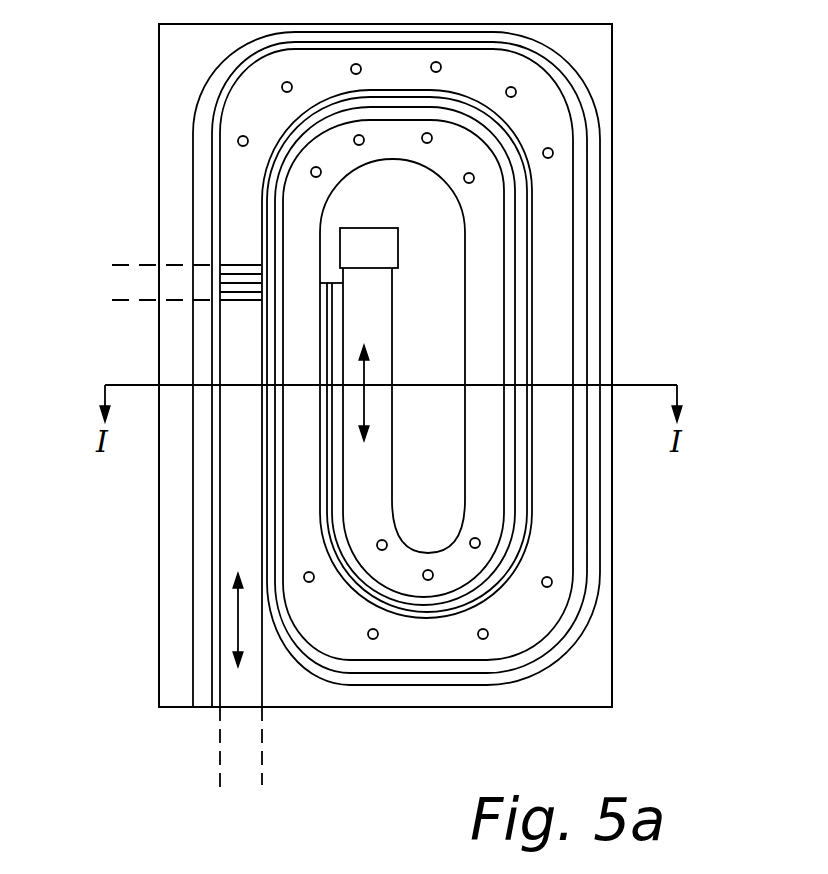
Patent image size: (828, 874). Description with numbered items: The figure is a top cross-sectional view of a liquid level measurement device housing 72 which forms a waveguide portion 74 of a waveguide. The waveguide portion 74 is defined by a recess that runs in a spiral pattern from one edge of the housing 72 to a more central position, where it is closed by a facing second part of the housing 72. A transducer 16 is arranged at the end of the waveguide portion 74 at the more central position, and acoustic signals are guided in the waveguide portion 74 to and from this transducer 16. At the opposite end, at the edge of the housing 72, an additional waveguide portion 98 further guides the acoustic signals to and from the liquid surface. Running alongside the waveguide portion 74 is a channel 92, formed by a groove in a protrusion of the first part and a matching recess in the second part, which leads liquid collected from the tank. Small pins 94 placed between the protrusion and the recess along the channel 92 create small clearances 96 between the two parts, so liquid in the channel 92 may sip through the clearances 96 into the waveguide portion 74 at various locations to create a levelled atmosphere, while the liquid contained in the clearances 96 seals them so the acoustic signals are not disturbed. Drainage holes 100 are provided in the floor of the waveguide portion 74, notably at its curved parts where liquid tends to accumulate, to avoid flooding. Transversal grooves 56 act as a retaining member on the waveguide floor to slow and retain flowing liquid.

The transducer 16 is at (378, 247).
The transversal grooves 56 is at (136, 262).
The liquid level measurement device housing 72 is at (612, 166).
The waveguide portion 74 is at (243, 686).
The channel 92 is at (202, 650).
The pins 94 is at (210, 516).
The clearances 96 is at (212, 557).
The additional waveguide portion 98 is at (222, 786).
The drainage holes 100 is at (240, 137).